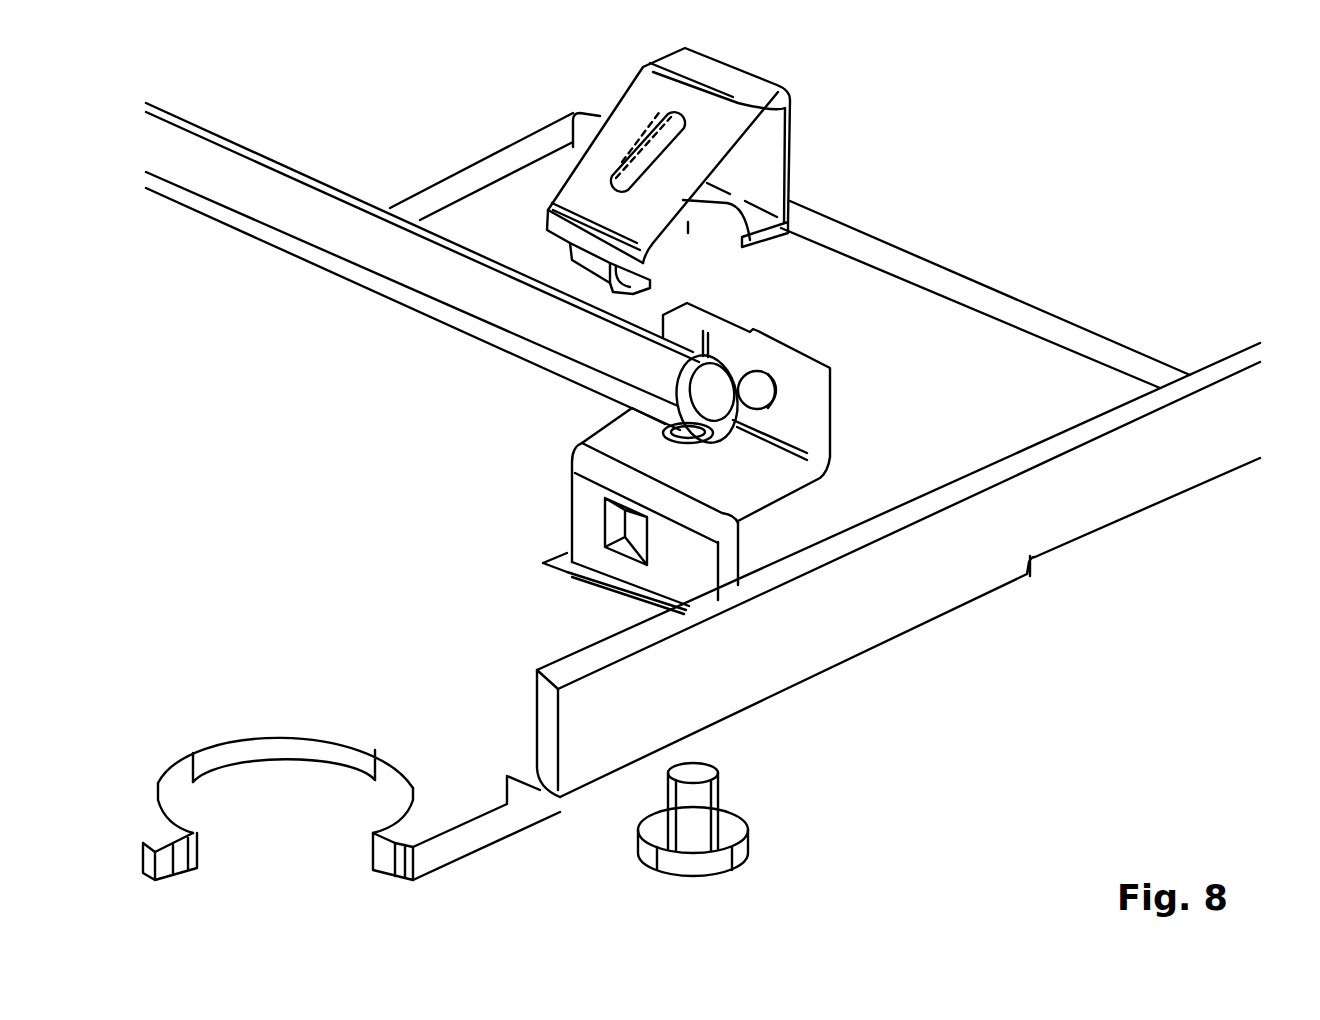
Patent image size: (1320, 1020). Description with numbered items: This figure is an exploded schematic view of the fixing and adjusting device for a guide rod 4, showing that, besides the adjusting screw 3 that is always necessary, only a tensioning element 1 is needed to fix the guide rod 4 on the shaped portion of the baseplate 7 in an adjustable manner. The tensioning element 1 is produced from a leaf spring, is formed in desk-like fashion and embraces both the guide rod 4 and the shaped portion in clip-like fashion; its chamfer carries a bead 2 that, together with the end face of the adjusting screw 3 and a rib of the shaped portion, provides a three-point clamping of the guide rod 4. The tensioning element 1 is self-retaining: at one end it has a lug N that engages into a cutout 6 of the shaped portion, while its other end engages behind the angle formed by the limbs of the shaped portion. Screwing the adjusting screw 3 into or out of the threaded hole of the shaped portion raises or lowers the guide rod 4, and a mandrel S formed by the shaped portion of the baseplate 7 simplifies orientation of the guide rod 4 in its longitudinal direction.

The tensioning element 1 is at (640, 276).
The bead 2 is at (630, 168).
The adjusting screw 3 is at (693, 858).
The guide rod 4 is at (230, 177).
The cutout 6 is at (648, 533).
The baseplate 7 is at (445, 812).
The lug N is at (630, 285).
The mandrel S is at (748, 398).